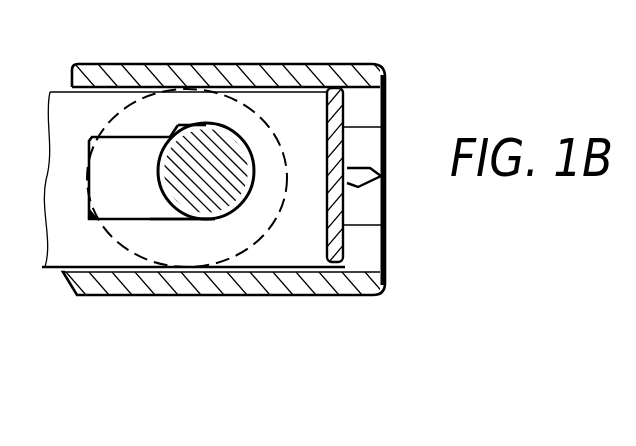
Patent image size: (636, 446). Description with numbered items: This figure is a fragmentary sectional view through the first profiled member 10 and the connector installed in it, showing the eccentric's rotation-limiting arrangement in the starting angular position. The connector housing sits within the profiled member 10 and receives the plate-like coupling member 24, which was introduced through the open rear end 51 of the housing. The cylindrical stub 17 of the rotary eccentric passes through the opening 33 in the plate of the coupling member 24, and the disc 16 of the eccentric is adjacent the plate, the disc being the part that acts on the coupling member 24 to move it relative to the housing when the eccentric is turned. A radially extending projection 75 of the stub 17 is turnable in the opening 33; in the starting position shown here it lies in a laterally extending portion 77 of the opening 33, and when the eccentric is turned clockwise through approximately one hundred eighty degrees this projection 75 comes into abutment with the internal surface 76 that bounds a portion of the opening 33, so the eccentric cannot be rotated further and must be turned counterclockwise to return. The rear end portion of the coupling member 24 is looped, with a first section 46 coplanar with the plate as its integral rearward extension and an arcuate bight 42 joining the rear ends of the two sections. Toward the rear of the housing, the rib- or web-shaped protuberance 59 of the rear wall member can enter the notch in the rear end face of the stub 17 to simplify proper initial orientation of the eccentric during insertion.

The first profiled member 10 is at (334, 51).
The disc 16 is at (268, 238).
The stub 17 is at (197, 163).
The coupling member 24 is at (63, 115).
The opening 33 is at (132, 183).
The arcuate bight 42 is at (347, 153).
The first section 46 is at (298, 235).
The open rear end 51 is at (386, 97).
The protuberance 59 is at (357, 175).
The projection 75 is at (166, 135).
The internal surface 76 is at (173, 222).
The laterally extending portion 77 is at (198, 124).